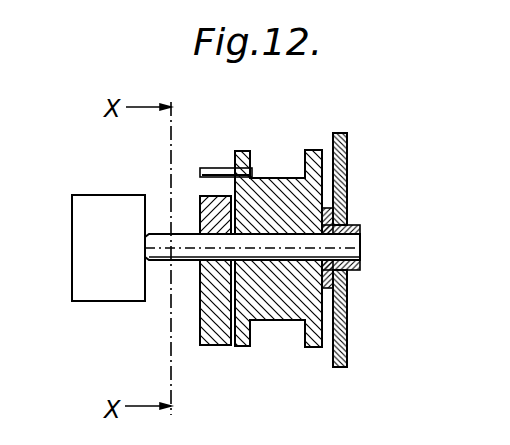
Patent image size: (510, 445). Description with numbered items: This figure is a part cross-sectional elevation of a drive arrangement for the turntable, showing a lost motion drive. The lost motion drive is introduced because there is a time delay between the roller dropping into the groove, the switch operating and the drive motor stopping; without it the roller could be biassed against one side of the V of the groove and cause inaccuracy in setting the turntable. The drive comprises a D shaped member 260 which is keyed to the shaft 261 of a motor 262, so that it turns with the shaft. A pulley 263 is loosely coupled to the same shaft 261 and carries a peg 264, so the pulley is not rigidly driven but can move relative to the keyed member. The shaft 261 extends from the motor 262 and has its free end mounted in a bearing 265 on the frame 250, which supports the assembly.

The frame 250 is at (347, 334).
The D shaped member 260 is at (213, 346).
The shaft 261 is at (166, 259).
The motor 262 is at (114, 292).
The pulley 263 is at (290, 320).
The peg 264 is at (217, 166).
The bearing 265 is at (360, 272).